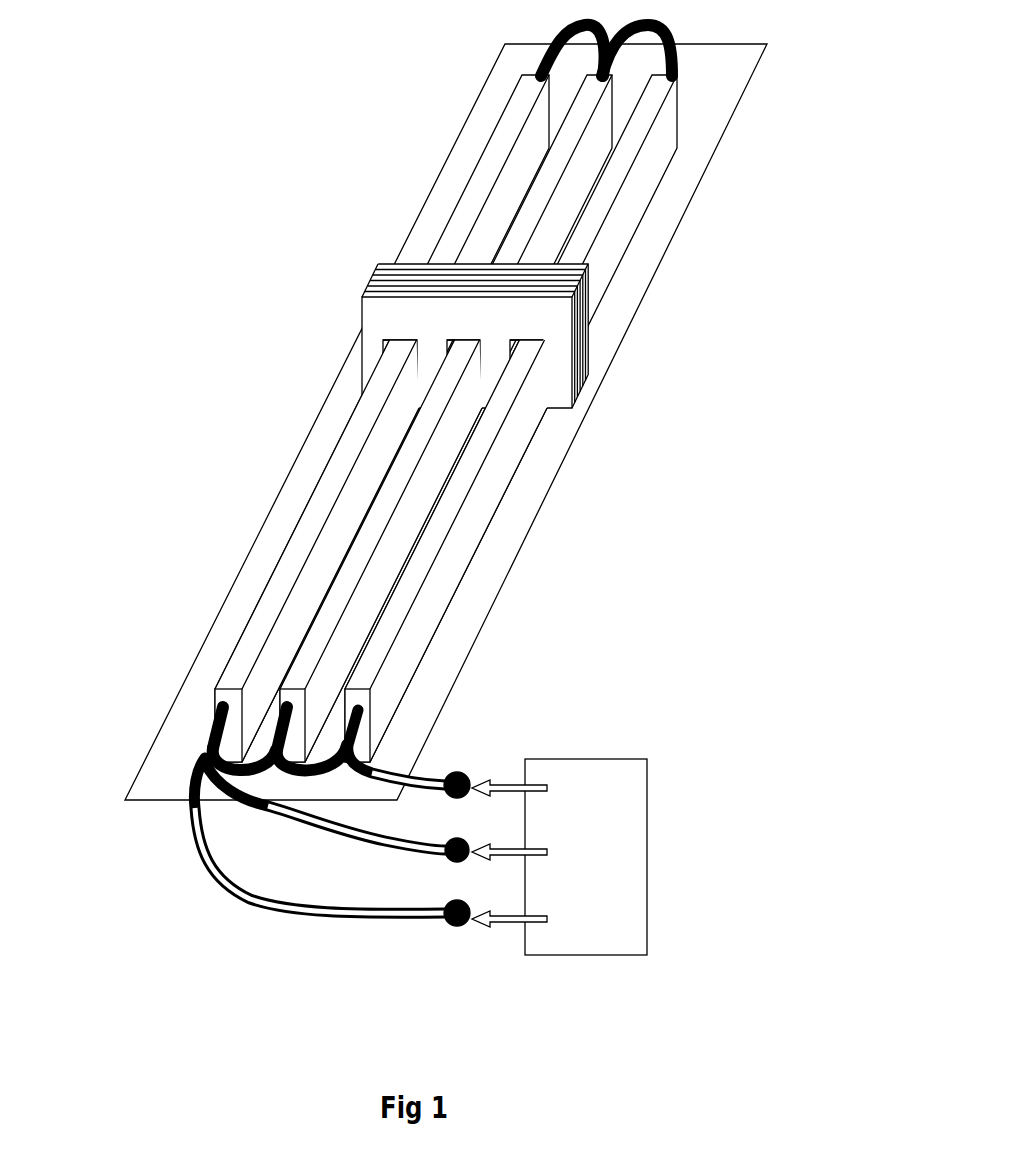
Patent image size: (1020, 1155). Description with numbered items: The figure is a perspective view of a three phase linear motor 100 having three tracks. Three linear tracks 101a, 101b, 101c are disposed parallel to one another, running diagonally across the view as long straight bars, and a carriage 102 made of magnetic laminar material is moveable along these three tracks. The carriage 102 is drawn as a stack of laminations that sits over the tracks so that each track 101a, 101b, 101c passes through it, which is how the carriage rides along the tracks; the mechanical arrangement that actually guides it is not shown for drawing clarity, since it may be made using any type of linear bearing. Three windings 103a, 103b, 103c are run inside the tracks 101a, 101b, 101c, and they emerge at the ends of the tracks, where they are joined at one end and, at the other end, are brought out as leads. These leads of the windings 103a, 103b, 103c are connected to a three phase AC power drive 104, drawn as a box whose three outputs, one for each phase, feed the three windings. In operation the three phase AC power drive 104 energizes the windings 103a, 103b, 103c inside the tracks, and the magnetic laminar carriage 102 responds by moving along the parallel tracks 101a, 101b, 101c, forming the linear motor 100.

The three phase linear motor 100 is at (228, 368).
The linear track 101a is at (528, 85).
The linear track 101b is at (537, 205).
The linear track 101c is at (617, 168).
The carriage 102 is at (457, 309).
The winding 103a is at (222, 760).
The winding 103b is at (352, 742).
The winding 103c is at (218, 780).
The three phase AC power drive 104 is at (625, 783).